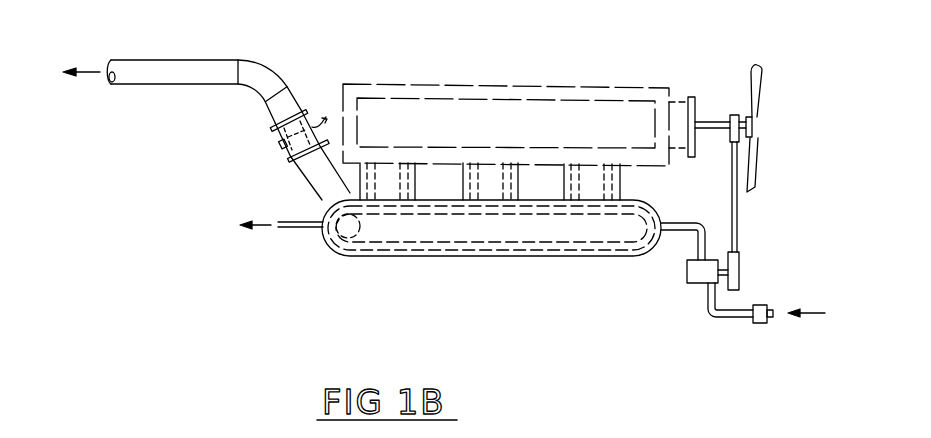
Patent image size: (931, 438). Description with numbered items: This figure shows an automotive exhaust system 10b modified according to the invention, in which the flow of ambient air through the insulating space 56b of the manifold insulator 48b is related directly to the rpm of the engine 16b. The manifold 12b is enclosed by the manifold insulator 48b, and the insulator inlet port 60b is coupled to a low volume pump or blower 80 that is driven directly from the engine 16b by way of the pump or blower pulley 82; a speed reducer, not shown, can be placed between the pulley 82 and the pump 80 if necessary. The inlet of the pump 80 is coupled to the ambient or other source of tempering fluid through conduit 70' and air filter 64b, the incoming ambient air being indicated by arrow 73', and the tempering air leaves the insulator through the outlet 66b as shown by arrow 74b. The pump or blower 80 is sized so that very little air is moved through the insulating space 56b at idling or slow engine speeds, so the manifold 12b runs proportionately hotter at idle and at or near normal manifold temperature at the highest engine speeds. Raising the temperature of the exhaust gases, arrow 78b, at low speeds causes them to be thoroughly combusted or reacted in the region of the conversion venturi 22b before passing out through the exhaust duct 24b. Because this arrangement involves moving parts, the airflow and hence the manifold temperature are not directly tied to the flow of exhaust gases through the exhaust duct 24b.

The engine exhaust system 10b is at (360, 262).
The manifold 12b is at (540, 240).
The engine 16b is at (510, 85).
The conversion venturi 22b is at (283, 142).
The exhaust duct 24b is at (228, 60).
The manifold insulator 48b is at (580, 258).
The insulating space 56b is at (442, 253).
The insulator inlet port 60b is at (678, 218).
The air filter 64b is at (763, 307).
The outlet conduit 66b is at (302, 230).
The conduit 70' is at (725, 326).
The ambient air flow arrow 73' is at (806, 340).
The outflow arrow 74b is at (250, 232).
The exhaust gases arrow 78b is at (93, 62).
The pump or blower 80 is at (698, 280).
The pump or blower pulley 82 is at (739, 260).